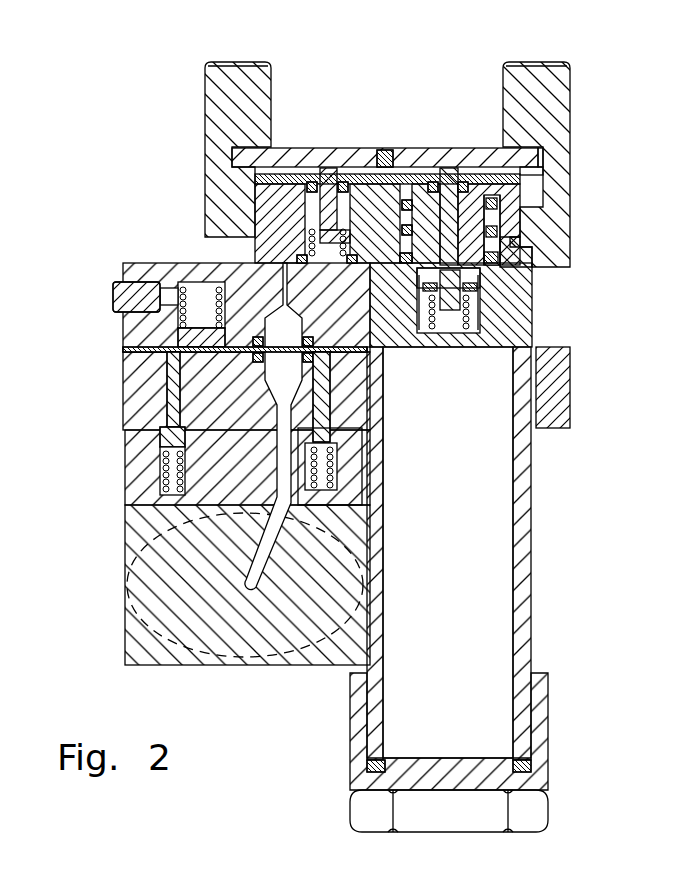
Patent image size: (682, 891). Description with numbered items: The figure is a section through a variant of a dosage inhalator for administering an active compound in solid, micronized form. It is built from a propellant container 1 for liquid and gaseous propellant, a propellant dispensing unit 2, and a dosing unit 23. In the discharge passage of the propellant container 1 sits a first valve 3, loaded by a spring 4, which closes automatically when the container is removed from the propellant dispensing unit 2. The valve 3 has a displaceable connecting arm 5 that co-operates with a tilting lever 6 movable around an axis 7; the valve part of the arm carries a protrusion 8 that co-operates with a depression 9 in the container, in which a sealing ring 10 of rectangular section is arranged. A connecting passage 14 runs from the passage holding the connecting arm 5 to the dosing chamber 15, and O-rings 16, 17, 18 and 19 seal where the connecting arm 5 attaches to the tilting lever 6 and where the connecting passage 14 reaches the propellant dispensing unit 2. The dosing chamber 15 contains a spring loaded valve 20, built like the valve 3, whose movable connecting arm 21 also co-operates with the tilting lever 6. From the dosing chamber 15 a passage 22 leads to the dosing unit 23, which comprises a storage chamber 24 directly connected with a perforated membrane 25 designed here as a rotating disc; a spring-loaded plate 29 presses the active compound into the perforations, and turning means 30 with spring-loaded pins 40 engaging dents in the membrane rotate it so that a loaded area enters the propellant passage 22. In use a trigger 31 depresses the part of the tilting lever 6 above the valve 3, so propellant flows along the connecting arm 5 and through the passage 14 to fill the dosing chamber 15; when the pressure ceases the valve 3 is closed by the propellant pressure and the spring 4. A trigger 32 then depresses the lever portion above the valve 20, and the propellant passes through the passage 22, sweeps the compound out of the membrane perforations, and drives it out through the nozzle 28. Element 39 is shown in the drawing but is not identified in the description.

The propellant container 1 is at (532, 533).
The propellant dispensing unit 2 is at (571, 153).
The first valve 3 is at (548, 362).
The spring 4 is at (460, 325).
The connecting arm 5 is at (520, 255).
The tilting lever 6 is at (525, 169).
The axis 7 is at (387, 150).
The protrusion 8 is at (462, 310).
The depression 9 is at (465, 285).
The sealing ring 10 is at (445, 340).
The connecting passage 14 is at (420, 168).
The dosing chamber 15 is at (350, 240).
The O-ring 16 is at (462, 178).
The O-ring 17 is at (497, 204).
The O-ring 18 is at (497, 232).
The O-ring 19 is at (498, 258).
The spring loaded valve 20 is at (307, 213).
The connecting arm 21 is at (323, 168).
The passage 22 is at (283, 268).
The dosing unit 23 is at (125, 346).
The storage chamber 24 is at (178, 282).
The perforated membrane 25 is at (167, 370).
The nozzle 28 is at (125, 660).
The spring-loaded plate 29 is at (178, 338).
The turning means 30 is at (160, 470).
The trigger 31 is at (556, 62).
The trigger 32 is at (246, 62).
The plug 39 is at (113, 298).
The spring-loaded pins 40 is at (166, 462).